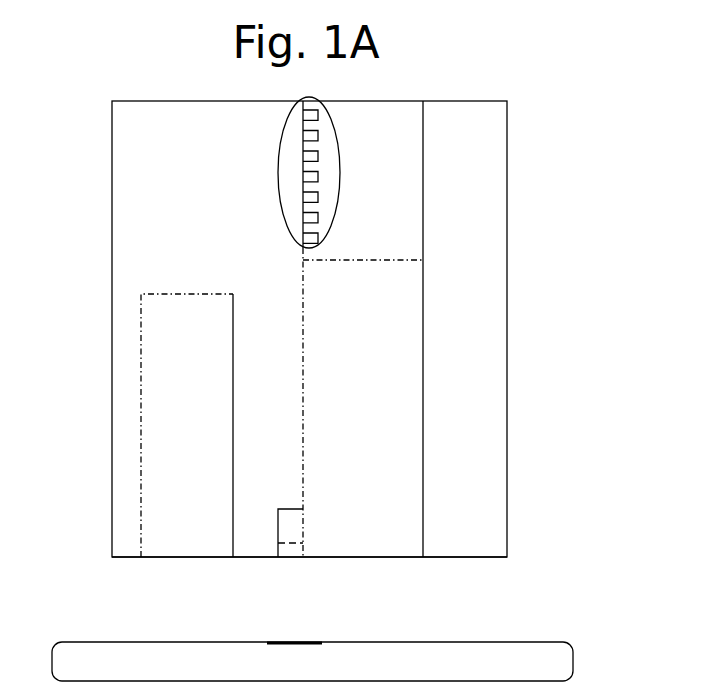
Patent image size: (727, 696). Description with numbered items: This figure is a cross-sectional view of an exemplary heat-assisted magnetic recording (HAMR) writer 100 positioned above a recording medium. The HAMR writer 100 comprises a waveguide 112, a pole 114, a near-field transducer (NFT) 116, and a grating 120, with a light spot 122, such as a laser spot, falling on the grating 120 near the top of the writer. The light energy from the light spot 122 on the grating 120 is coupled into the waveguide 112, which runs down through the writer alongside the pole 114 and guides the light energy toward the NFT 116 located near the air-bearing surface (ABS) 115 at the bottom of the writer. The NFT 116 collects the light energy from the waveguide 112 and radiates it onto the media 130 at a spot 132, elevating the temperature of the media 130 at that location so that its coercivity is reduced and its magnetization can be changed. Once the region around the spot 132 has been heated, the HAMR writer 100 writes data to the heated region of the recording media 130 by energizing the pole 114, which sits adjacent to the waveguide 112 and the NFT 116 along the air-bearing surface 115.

The HAMR writer 100 is at (527, 329).
The waveguide 112 is at (379, 364).
The pole 114 is at (198, 390).
The air-bearing surface (ABS) 115 is at (106, 561).
The near-field transducer (NFT) 116 is at (290, 508).
The grating 120 is at (381, 120).
The light spot 122 is at (283, 176).
The media 130 is at (350, 677).
The spot 132 is at (296, 642).